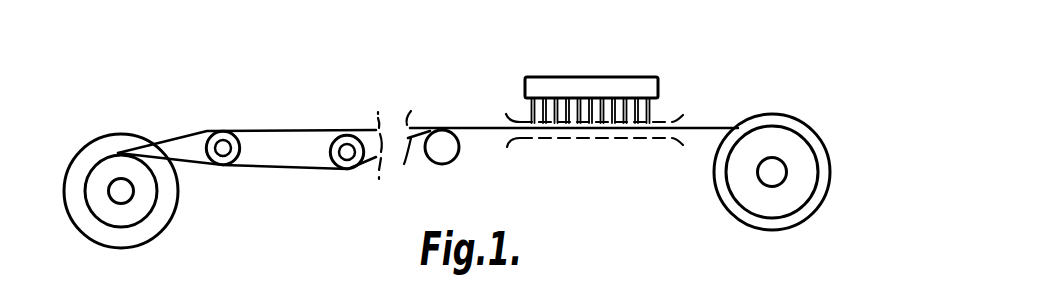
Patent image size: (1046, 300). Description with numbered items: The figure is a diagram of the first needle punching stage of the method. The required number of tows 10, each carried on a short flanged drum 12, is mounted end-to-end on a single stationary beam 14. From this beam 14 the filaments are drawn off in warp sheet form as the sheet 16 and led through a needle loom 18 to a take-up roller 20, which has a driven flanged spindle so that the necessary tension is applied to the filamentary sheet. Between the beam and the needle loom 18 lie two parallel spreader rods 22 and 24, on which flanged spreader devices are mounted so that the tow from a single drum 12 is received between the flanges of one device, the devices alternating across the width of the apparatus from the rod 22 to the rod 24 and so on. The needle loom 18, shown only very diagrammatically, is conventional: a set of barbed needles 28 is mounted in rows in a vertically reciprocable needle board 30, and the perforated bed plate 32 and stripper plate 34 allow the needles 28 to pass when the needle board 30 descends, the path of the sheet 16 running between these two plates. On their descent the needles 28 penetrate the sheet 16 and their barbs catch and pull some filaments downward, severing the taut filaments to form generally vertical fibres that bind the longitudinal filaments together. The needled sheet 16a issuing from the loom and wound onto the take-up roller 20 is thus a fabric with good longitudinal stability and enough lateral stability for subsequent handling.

The tow 10 is at (103, 215).
The short flanged drum 12 is at (88, 157).
The stationary beam 14 is at (133, 196).
The warp sheet 16 is at (187, 133).
The needled sheet 16a is at (718, 125).
The needle loom 18 is at (600, 77).
The take-up roller 20 is at (790, 148).
The spreader rod 22 is at (226, 158).
The spreader rod 24 is at (348, 160).
The barbed needles 28 is at (589, 113).
The needle board 30 is at (632, 87).
The bed plate 32 is at (523, 141).
The stripper plate 34 is at (517, 115).